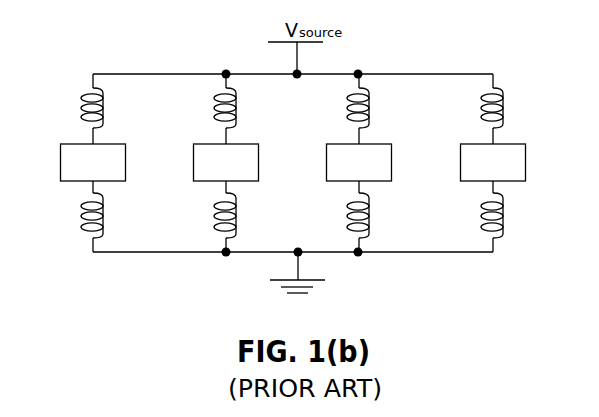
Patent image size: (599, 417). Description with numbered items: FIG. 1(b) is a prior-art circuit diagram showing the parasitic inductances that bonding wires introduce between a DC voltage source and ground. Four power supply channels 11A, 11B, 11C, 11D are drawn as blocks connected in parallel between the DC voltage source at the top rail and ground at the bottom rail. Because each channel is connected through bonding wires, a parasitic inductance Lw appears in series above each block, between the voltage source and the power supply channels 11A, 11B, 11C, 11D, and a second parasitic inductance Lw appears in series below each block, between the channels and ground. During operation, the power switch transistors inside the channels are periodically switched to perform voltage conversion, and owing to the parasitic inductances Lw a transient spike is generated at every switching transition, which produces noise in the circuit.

The power supply channel 11A is at (93, 163).
The power supply channel 11B is at (226, 163).
The power supply channel 11C is at (359, 163).
The power supply channel 11D is at (493, 163).
The parasitic inductance Lw is at (71, 112).